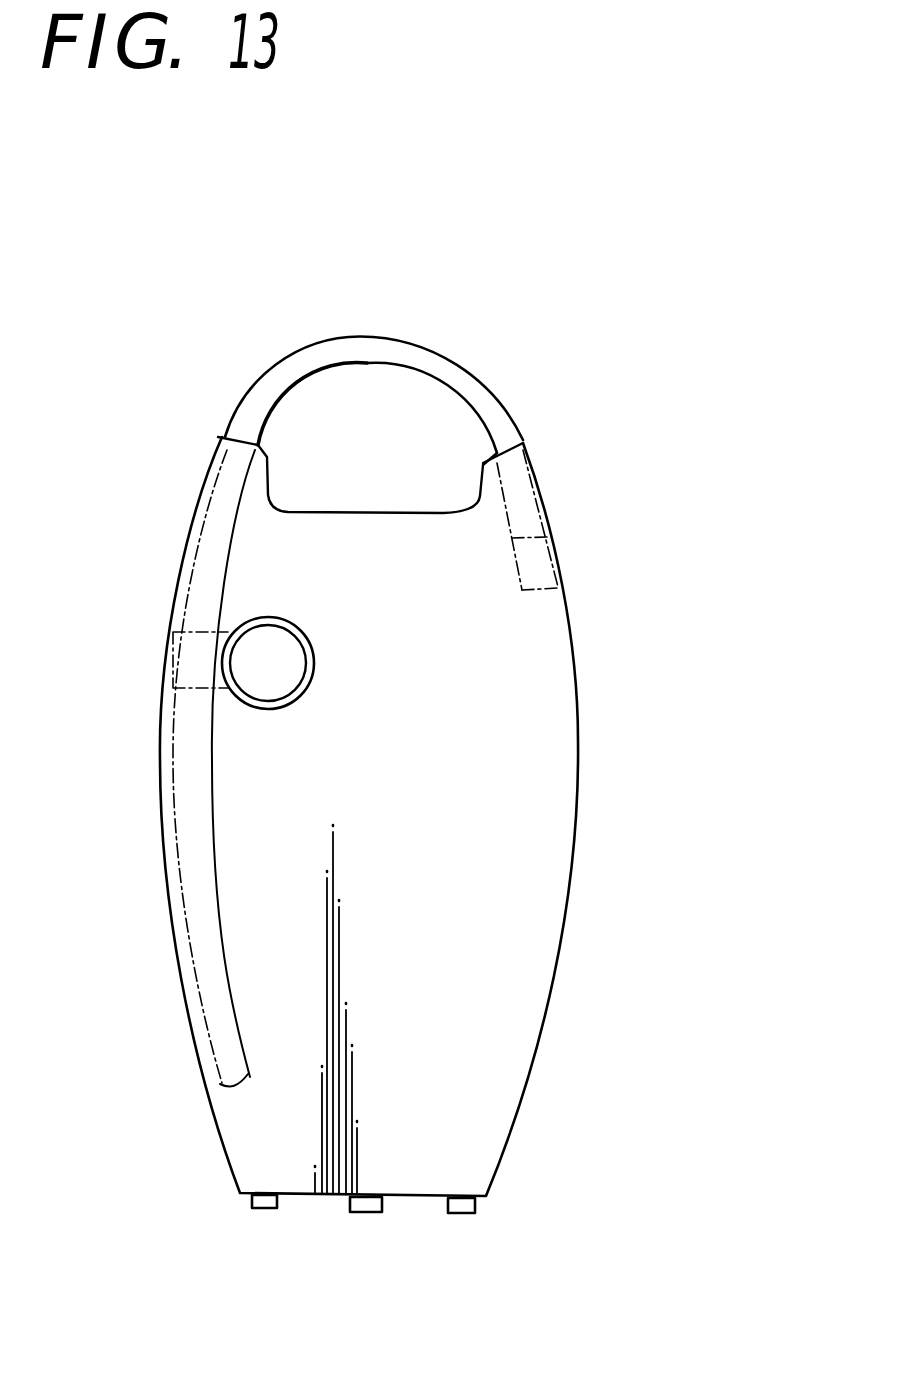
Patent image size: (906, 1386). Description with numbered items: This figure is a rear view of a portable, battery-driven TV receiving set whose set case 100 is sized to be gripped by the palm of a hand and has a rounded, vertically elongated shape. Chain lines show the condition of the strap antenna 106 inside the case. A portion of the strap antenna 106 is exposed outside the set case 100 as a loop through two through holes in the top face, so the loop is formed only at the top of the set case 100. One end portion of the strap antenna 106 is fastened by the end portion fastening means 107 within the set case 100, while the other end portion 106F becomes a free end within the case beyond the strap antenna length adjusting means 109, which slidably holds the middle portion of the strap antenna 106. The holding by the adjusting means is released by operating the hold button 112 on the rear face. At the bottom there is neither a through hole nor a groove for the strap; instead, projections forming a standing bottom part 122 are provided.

The set case 100 is at (547, 758).
The strap antenna 106 is at (430, 360).
The other end portion 106F is at (237, 1082).
The end portion fastening means 107 is at (540, 568).
The strap antenna length adjusting means 109 is at (233, 610).
The hold button 112 is at (265, 680).
The standing bottom part 122 is at (265, 1208).